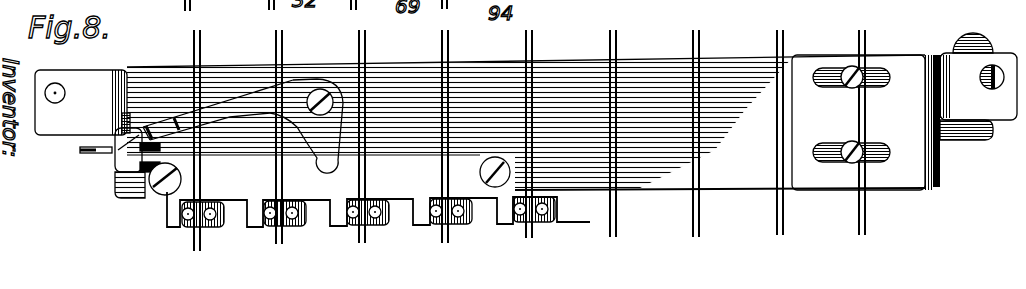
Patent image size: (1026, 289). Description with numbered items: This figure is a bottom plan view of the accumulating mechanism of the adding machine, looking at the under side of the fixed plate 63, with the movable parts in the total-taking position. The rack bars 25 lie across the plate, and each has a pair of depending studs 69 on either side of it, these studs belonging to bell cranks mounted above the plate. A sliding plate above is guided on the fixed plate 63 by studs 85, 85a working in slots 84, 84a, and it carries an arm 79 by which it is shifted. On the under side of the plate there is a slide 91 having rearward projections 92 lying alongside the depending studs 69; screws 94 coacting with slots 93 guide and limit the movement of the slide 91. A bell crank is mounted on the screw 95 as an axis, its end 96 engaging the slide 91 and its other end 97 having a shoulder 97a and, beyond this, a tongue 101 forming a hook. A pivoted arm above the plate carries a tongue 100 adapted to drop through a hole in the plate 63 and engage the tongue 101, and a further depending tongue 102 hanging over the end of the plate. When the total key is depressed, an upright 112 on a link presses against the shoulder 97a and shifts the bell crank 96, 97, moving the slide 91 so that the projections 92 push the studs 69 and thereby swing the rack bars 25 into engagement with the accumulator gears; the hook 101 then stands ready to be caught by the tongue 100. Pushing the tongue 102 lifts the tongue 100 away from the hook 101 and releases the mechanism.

The rack bar 25 is at (609, 42).
The plate 63 is at (646, 78).
The studs 69 is at (452, 222).
The arm 79 is at (958, 133).
The slot 84 is at (893, 138).
The slot 84a is at (878, 67).
The stud 85 is at (850, 143).
The stud 85a is at (835, 54).
The slide 91 is at (305, 173).
The rearward projections 92 is at (260, 229).
The slot 93 is at (509, 173).
The screw 94 is at (491, 192).
The screw 95 is at (318, 89).
The bell crank end 96 is at (323, 140).
The bell crank end 97 is at (227, 107).
The shoulder 97a is at (117, 134).
The tongue 100 is at (137, 157).
The tongue 101 is at (143, 200).
The tongue 102 is at (92, 153).
The upright 112 is at (126, 112).